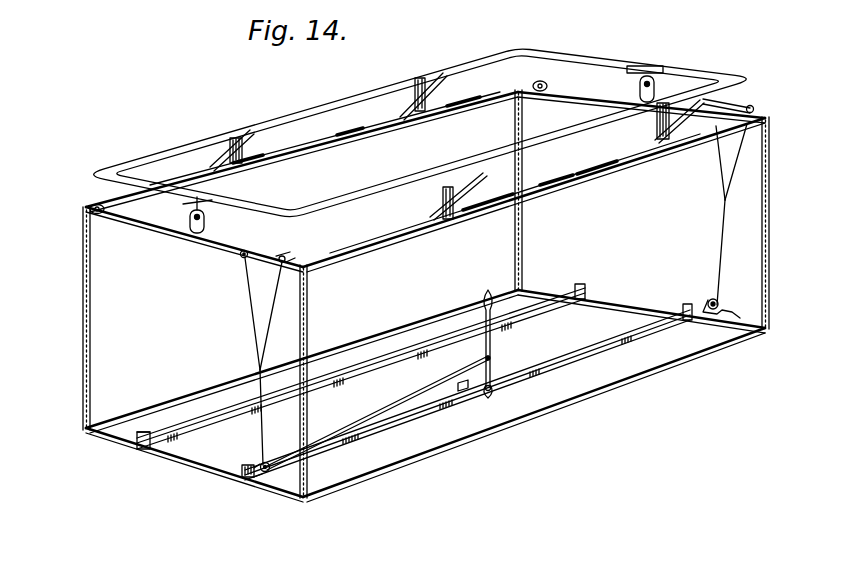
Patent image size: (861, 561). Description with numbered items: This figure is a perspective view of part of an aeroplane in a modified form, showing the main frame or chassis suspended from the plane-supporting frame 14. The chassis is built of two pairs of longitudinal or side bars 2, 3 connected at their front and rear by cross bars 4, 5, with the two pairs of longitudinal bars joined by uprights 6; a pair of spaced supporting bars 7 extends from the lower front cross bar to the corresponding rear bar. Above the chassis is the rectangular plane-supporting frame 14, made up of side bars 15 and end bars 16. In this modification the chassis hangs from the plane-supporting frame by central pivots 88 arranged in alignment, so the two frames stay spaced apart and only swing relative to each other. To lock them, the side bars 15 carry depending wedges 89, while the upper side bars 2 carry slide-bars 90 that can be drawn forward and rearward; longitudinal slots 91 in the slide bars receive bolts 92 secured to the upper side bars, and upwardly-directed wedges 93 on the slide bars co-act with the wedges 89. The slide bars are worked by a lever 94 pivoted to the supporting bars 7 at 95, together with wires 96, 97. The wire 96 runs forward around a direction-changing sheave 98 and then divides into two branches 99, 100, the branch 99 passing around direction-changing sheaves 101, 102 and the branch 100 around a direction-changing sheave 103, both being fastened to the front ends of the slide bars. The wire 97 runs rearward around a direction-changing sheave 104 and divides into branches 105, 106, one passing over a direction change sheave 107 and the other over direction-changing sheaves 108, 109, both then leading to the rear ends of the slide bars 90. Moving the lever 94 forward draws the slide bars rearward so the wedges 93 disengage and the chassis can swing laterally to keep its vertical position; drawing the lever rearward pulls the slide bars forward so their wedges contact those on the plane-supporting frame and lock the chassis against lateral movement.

The longitudinal or side bars 2 is at (330, 147).
The longitudinal or side bars 3 is at (372, 333).
The cross bars 4 is at (143, 228).
The cross bars 5 is at (185, 468).
The uprights 6 is at (90, 300).
The supporting bars 7 is at (200, 425).
The plane-supporting frame 14 is at (168, 190).
The side bars 15 is at (278, 117).
The end bars 16 is at (590, 53).
The central pivots 88 is at (204, 207).
The depending wedges 89 is at (236, 138).
The slide-bars 90 is at (318, 140).
The longitudinal slots 91 is at (290, 150).
The bolts 92 is at (262, 162).
The upwardly-directed wedges 93 is at (235, 152).
The lever 94 is at (486, 356).
The pivot 95 is at (492, 388).
The wire 96 is at (415, 397).
The wire 97 is at (653, 322).
The direction-changing sheave 98 is at (262, 480).
The branch 99 is at (254, 322).
The branch 100 is at (272, 305).
The direction-changing sheave 101 is at (242, 258).
The direction-changing sheave 102 is at (88, 212).
The direction-changing sheave 103 is at (282, 256).
The direction-changing sheave 104 is at (722, 303).
The branch 105 is at (722, 165).
The branch 106 is at (745, 165).
The direction change sheave 107 is at (755, 108).
The direction-changing sheave 108 is at (725, 104).
The direction-changing sheave 109 is at (540, 81).